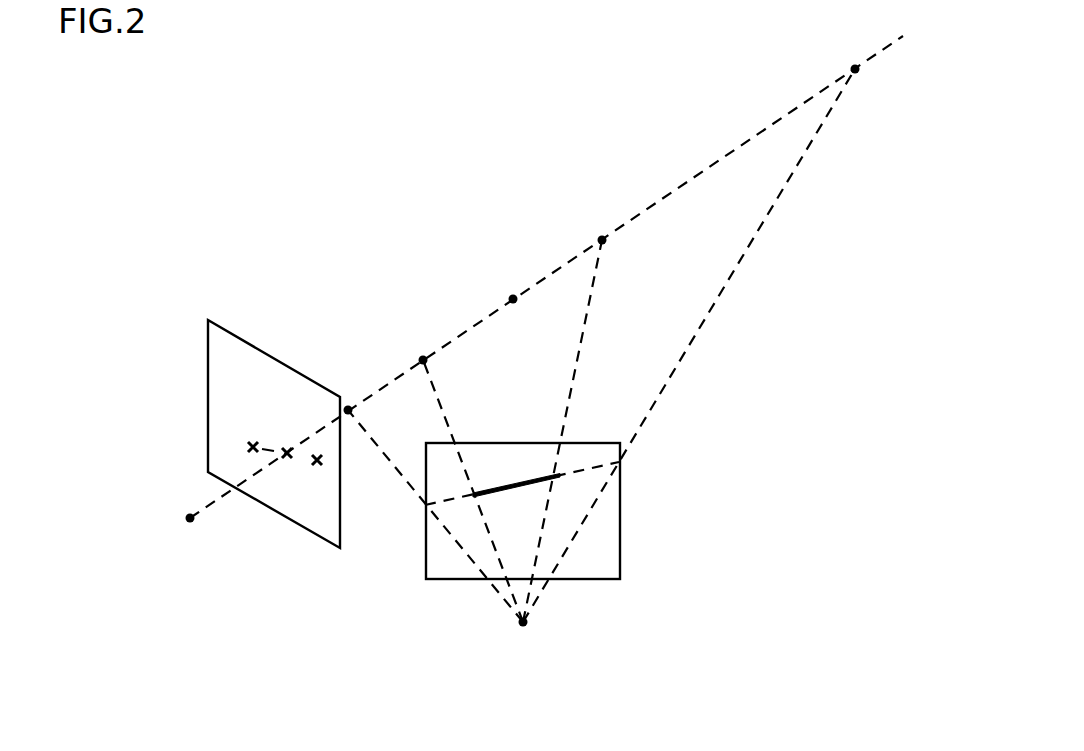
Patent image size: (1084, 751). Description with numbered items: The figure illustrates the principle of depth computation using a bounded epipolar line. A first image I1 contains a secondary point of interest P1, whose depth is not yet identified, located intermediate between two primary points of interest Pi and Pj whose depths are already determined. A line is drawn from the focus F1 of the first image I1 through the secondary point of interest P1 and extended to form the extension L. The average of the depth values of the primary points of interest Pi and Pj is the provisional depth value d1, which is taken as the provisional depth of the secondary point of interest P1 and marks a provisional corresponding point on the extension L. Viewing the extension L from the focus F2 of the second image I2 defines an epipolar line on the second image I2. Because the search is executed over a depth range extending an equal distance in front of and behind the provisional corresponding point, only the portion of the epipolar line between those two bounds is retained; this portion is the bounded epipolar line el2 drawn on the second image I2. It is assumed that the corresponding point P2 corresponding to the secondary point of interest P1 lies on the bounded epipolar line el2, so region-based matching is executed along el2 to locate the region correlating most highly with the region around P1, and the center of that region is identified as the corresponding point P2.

The extension L is at (546, 277).
The focus of the first image F1 is at (176, 534).
The focus of the second image F2 is at (601, 366).
The first image I1 is at (291, 503).
The second image I2 is at (610, 545).
The primary point of interest Pi is at (253, 431).
The secondary point of interest P1 is at (286, 434).
The primary point of interest Pj is at (314, 477).
The provisional depth value d1 is at (508, 286).
The corresponding point P2 is at (516, 476).
The bounded epipolar line el2 is at (517, 487).